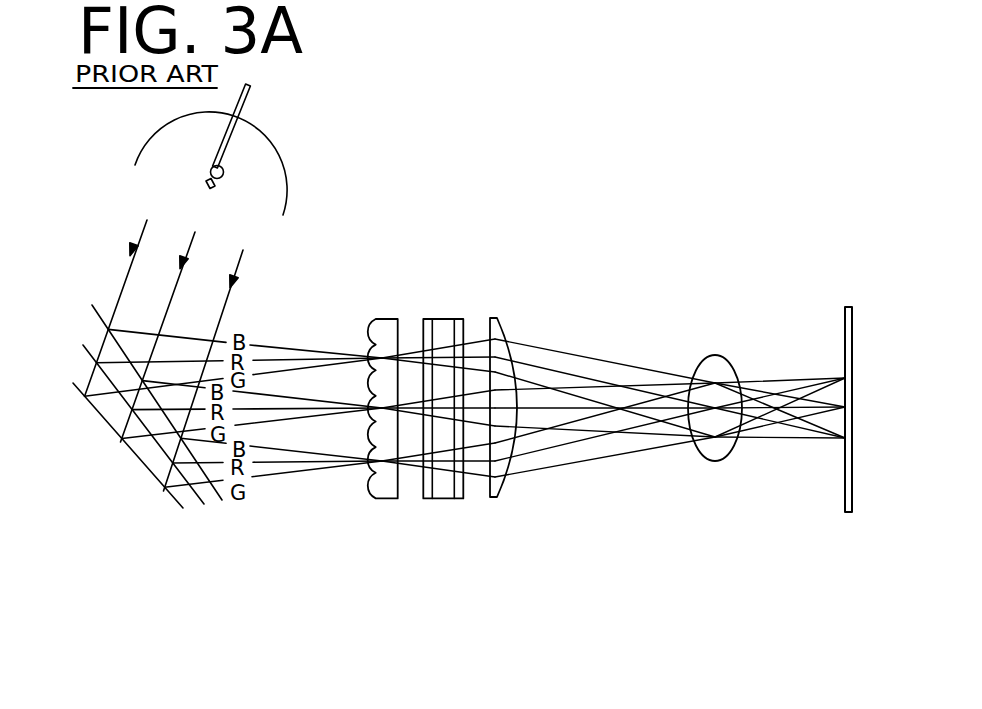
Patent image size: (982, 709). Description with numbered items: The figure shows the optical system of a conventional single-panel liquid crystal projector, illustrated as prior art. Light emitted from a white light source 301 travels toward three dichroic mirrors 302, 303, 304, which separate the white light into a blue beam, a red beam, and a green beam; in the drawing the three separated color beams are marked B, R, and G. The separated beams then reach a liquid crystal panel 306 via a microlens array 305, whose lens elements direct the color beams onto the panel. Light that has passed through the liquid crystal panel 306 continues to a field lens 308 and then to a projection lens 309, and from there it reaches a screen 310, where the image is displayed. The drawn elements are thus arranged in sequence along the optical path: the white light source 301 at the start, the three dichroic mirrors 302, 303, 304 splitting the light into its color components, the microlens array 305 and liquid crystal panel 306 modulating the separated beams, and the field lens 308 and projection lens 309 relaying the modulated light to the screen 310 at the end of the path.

The white light source 301 is at (274, 134).
The dichroic mirror 302 is at (221, 498).
The dichroic mirror 303 is at (197, 497).
The dichroic mirror 304 is at (142, 468).
The microlens array 305 is at (395, 499).
The liquid crystal panel 306 is at (441, 319).
The field lens 308 is at (498, 326).
The projection lens 309 is at (715, 353).
The screen 310 is at (845, 497).